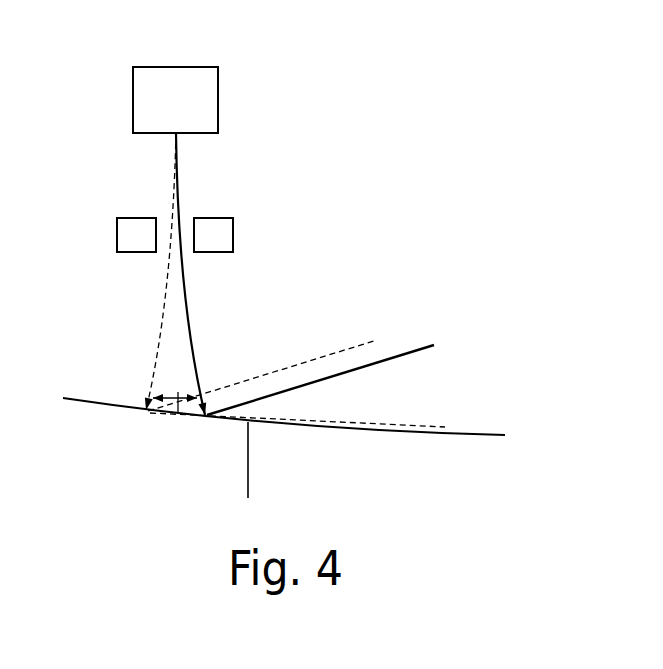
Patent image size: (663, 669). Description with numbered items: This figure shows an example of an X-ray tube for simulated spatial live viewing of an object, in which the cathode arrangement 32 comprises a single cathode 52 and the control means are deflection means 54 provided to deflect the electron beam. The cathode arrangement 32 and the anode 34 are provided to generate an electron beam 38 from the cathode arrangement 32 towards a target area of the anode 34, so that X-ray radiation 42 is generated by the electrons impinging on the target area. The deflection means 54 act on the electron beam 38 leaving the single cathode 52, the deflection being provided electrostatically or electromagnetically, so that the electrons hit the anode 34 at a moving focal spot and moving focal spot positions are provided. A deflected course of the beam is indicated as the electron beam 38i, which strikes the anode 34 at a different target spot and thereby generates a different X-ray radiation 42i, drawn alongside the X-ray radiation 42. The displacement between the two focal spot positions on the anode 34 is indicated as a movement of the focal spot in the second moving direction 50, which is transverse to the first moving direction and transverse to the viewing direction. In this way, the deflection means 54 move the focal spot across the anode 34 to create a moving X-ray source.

The cathode arrangement 32 is at (232, 58).
The single cathode 52 is at (218, 100).
The deflection means 54 is at (233, 235).
The electron beam 38 is at (197, 365).
The ideal measurement light beam 38i is at (163, 313).
The X-ray radiation 42 is at (418, 345).
The X-ray radiation 42i is at (357, 343).
The second moving direction 50 is at (176, 413).
The anode 34 is at (249, 460).